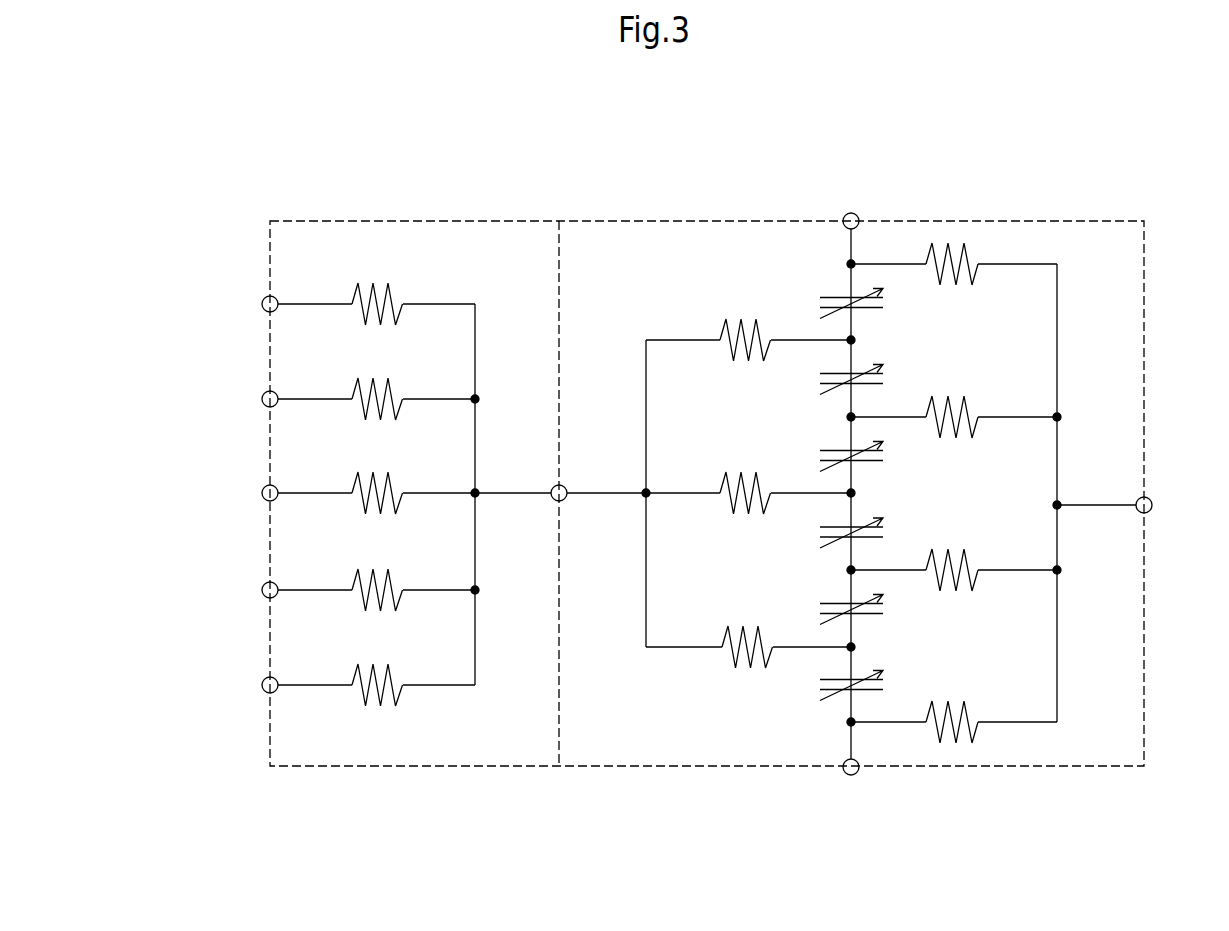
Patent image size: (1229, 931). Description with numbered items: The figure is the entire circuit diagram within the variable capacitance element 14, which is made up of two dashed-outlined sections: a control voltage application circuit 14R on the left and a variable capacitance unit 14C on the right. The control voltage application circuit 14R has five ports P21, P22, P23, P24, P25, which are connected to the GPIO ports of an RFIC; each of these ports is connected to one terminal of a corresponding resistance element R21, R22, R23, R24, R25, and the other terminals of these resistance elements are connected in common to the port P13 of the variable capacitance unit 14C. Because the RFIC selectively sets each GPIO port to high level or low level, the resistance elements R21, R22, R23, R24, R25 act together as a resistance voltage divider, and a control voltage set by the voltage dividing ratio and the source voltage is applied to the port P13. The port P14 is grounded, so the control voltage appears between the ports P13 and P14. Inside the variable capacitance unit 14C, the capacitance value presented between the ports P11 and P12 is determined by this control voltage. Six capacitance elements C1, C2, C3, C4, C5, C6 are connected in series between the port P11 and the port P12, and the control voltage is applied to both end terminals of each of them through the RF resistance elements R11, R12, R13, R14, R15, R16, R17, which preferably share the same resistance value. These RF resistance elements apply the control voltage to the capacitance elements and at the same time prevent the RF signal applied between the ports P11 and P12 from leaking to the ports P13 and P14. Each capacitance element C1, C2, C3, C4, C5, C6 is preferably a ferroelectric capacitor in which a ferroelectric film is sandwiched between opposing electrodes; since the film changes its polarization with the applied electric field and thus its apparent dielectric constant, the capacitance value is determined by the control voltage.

The variable capacitance element 14 is at (1215, 167).
The control voltage application circuit 14R is at (409, 221).
The variable capacitance unit 14C is at (975, 221).
The port P11 is at (852, 203).
The port P12 is at (856, 782).
The port P13 is at (582, 478).
The port P14 is at (1130, 506).
The port P21 is at (210, 304).
The port P22 is at (210, 399).
The port P23 is at (210, 493).
The port P24 is at (210, 590).
The port P25 is at (210, 685).
The RF resistance element R11 is at (954, 282).
The RF resistance element R12 is at (748, 325).
The RF resistance element R13 is at (954, 435).
The RF resistance element R14 is at (748, 477).
The RF resistance element R15 is at (954, 555).
The RF resistance element R16 is at (748, 663).
The RF resistance element R17 is at (954, 706).
The resistance element R21 is at (376, 321).
The resistance element R22 is at (376, 416).
The resistance element R23 is at (376, 511).
The resistance element R24 is at (376, 607).
The resistance element R25 is at (376, 702).
The capacitance element C1 is at (871, 306).
The capacitance element C2 is at (871, 380).
The capacitance element C3 is at (871, 459).
The capacitance element C4 is at (871, 532).
The capacitance element C5 is at (871, 611).
The capacitance element C6 is at (871, 685).